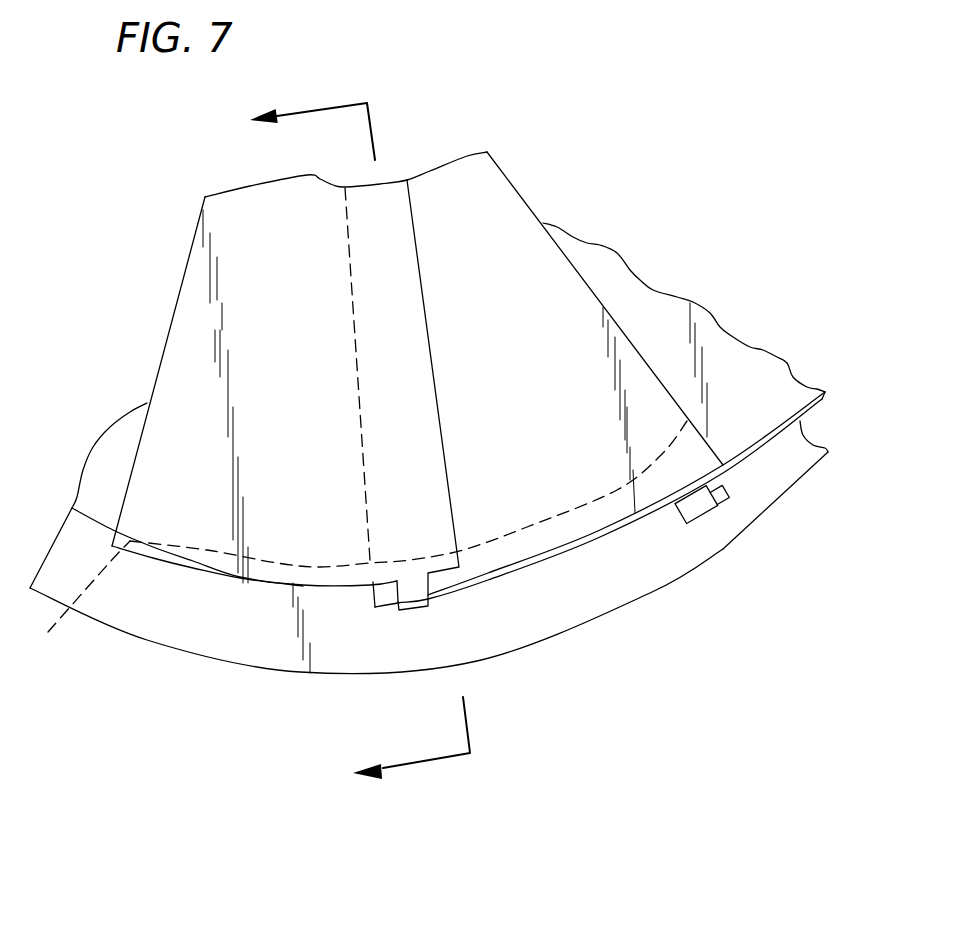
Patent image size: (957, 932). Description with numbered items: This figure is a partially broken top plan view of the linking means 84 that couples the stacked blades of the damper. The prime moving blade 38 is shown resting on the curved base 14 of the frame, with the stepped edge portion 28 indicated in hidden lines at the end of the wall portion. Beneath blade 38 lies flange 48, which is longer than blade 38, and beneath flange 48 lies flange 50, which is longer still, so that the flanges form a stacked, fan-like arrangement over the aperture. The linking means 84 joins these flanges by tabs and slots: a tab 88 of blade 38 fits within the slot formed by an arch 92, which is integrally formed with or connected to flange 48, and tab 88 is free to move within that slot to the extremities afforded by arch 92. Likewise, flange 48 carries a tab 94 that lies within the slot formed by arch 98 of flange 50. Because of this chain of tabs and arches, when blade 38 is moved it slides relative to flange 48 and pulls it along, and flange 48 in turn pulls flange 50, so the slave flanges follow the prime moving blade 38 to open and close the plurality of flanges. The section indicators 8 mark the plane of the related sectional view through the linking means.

The section line 8- 8 is at (341, 448).
The base 14 is at (158, 622).
The stepped edge portion 28 is at (356, 544).
The prime moving blade 38 is at (185, 395).
The flange 48 is at (543, 303).
The flange 50 is at (765, 375).
The linking means 84 is at (724, 296).
The tab 88 is at (420, 583).
The arch 92 is at (573, 560).
The tab 94 is at (720, 513).
The arch 98 is at (743, 475).